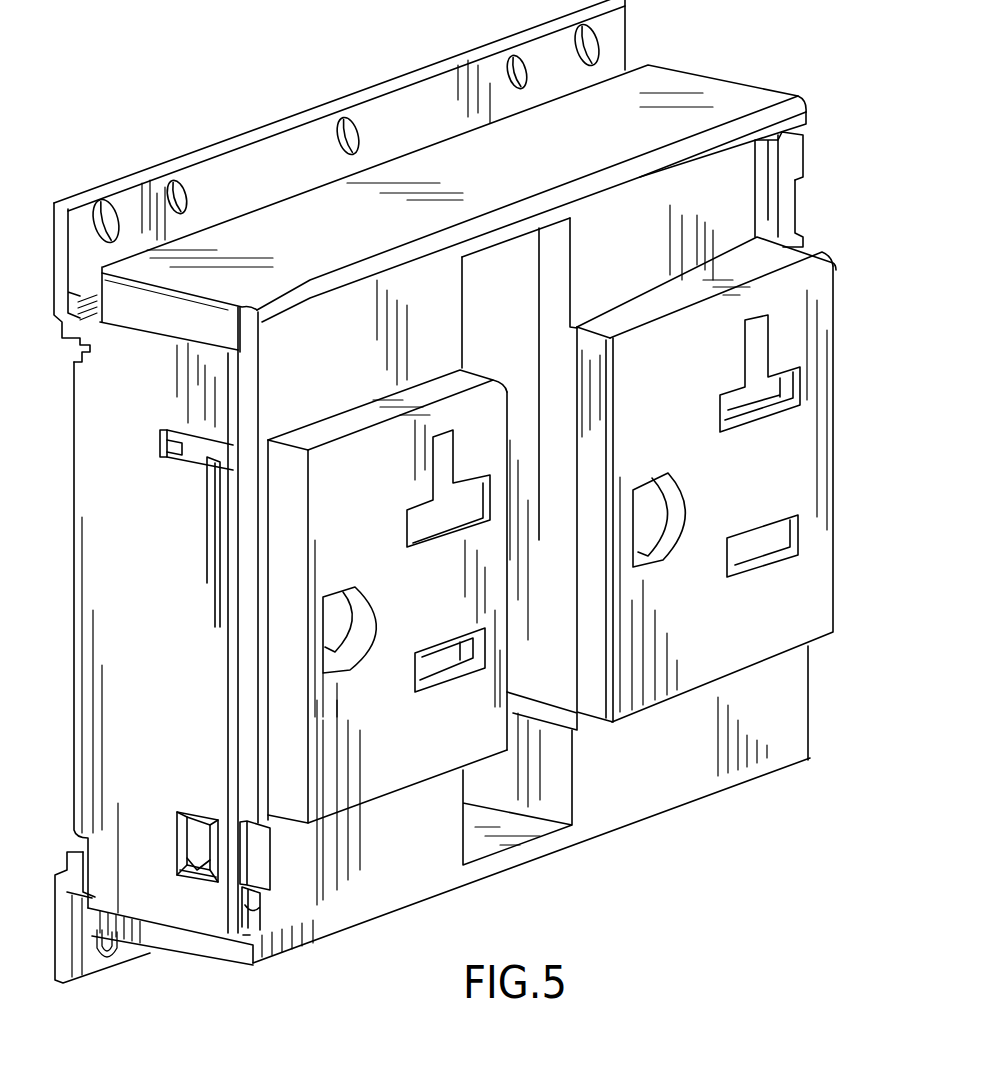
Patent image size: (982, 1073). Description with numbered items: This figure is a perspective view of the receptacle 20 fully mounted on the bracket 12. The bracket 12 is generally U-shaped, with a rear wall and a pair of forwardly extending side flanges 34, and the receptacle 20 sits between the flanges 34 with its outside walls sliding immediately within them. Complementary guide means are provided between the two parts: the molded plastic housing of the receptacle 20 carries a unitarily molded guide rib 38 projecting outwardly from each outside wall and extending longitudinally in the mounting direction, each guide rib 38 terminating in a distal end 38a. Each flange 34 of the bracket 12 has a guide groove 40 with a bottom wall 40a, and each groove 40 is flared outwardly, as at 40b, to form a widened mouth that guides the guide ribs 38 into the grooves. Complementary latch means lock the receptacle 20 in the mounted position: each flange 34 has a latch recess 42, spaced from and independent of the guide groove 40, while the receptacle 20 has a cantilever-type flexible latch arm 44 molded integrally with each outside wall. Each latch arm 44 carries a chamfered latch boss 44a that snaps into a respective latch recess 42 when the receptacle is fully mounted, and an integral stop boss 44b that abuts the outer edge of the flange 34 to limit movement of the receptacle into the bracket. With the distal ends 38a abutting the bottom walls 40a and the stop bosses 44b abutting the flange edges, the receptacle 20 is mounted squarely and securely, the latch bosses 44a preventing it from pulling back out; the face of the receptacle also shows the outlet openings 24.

The bracket 12 is at (195, 147).
The receptacle 20 is at (703, 69).
The outlet receptacle faces 24 is at (762, 542).
The side flanges 34 is at (118, 688).
The guide rib 38 is at (212, 457).
The distal end 38a is at (182, 445).
The guide groove 40 is at (230, 463).
The bottom wall 40a is at (160, 440).
The flared portion 40b is at (235, 472).
The latch recess 42 is at (218, 872).
The flexible latch arm 44 is at (765, 213).
The latch boss 44a is at (202, 858).
The stop boss 44b is at (807, 157).